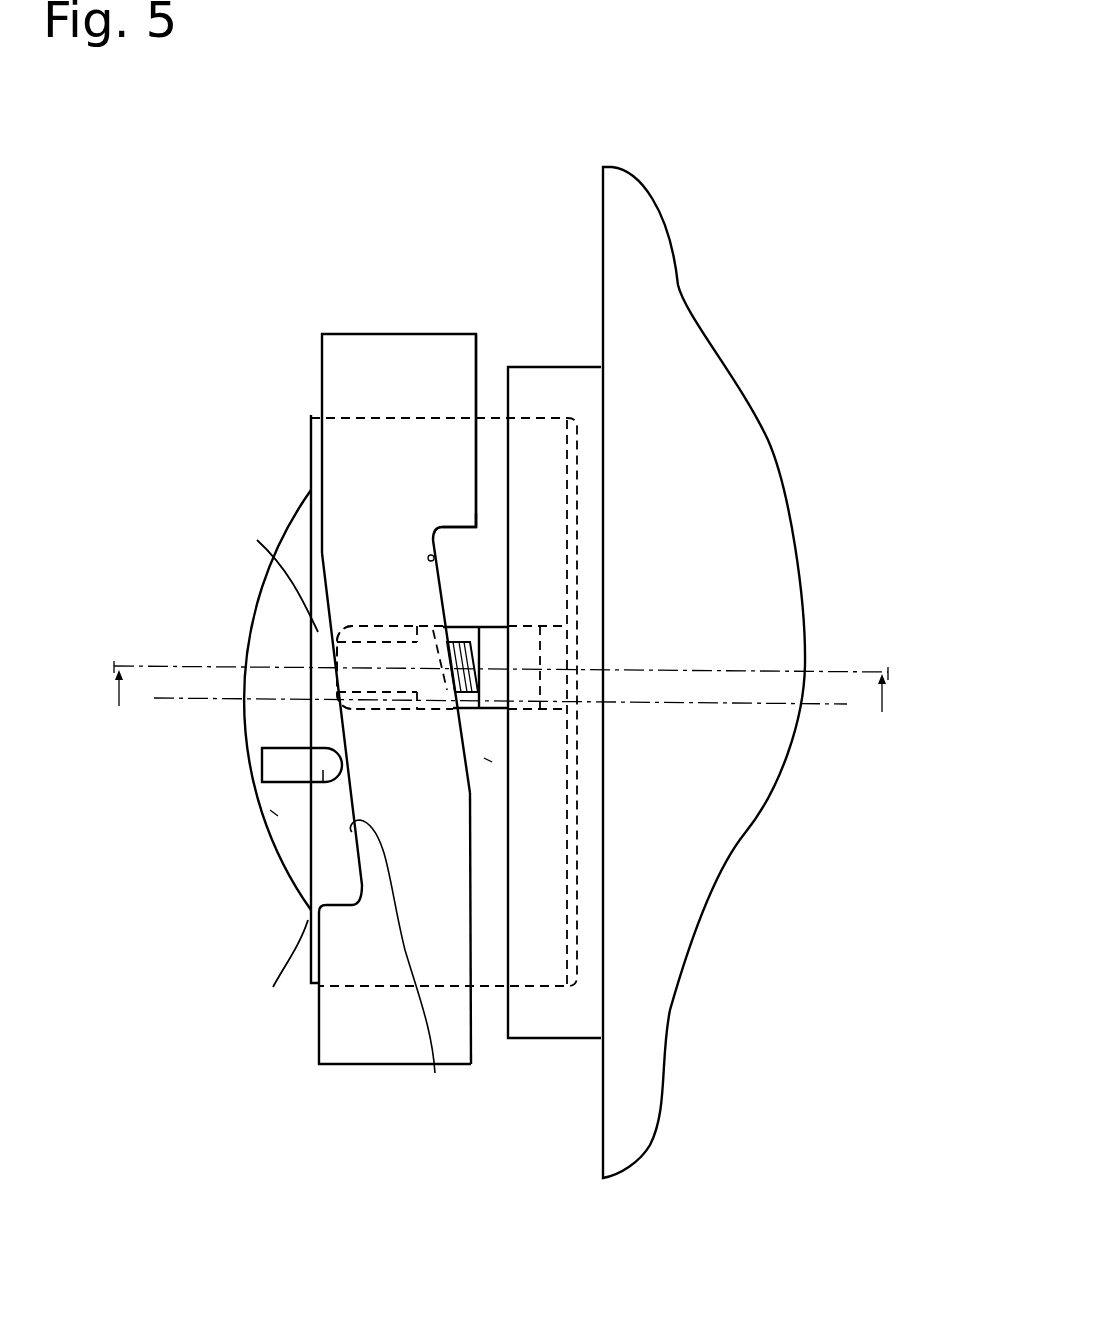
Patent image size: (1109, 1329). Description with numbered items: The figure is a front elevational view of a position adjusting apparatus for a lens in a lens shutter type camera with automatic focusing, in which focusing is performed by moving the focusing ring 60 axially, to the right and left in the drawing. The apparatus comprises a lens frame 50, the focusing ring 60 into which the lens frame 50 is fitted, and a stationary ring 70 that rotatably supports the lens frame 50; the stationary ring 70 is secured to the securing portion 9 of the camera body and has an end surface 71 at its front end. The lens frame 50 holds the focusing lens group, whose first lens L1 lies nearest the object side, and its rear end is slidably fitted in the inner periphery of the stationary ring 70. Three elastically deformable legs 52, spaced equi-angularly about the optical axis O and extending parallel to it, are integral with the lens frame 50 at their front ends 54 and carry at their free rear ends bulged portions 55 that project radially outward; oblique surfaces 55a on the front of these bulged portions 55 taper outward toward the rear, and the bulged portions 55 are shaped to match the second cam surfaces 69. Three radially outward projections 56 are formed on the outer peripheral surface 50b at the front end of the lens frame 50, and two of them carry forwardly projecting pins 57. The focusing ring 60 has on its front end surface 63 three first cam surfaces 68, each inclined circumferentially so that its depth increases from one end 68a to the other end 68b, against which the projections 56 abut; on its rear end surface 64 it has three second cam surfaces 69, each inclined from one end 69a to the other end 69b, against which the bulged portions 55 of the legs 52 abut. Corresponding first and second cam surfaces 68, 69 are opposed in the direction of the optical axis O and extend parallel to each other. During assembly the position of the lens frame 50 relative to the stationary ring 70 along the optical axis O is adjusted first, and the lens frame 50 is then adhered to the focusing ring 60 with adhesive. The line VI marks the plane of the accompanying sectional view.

The securing portion 9 is at (648, 245).
The lens frame 50 is at (324, 877).
The outer peripheral surface 50b is at (488, 760).
The elastically deformable legs 52 is at (380, 655).
The front ends 54 is at (337, 657).
The bulged portions 55 is at (458, 627).
The oblique surfaces 55a is at (433, 630).
The projections 56 is at (323, 770).
The pins 57 is at (273, 771).
The focusing ring 60 is at (428, 350).
The front end surface 63 is at (317, 342).
The rear end surface 64 is at (483, 343).
The first cam surfaces 68 is at (401, 964).
The one end of first cam surface 68a is at (269, 569).
The other end of first cam surface 68b is at (274, 970).
The second cam surfaces 69 is at (430, 558).
The one end of second cam surface 69a is at (473, 800).
The other end of second cam surface 69b is at (474, 523).
The stationary ring 70 is at (552, 373).
The end surface 71 is at (507, 458).
The optical axis O is at (172, 700).
The first lens L1 is at (274, 813).
The section line VI is at (499, 699).